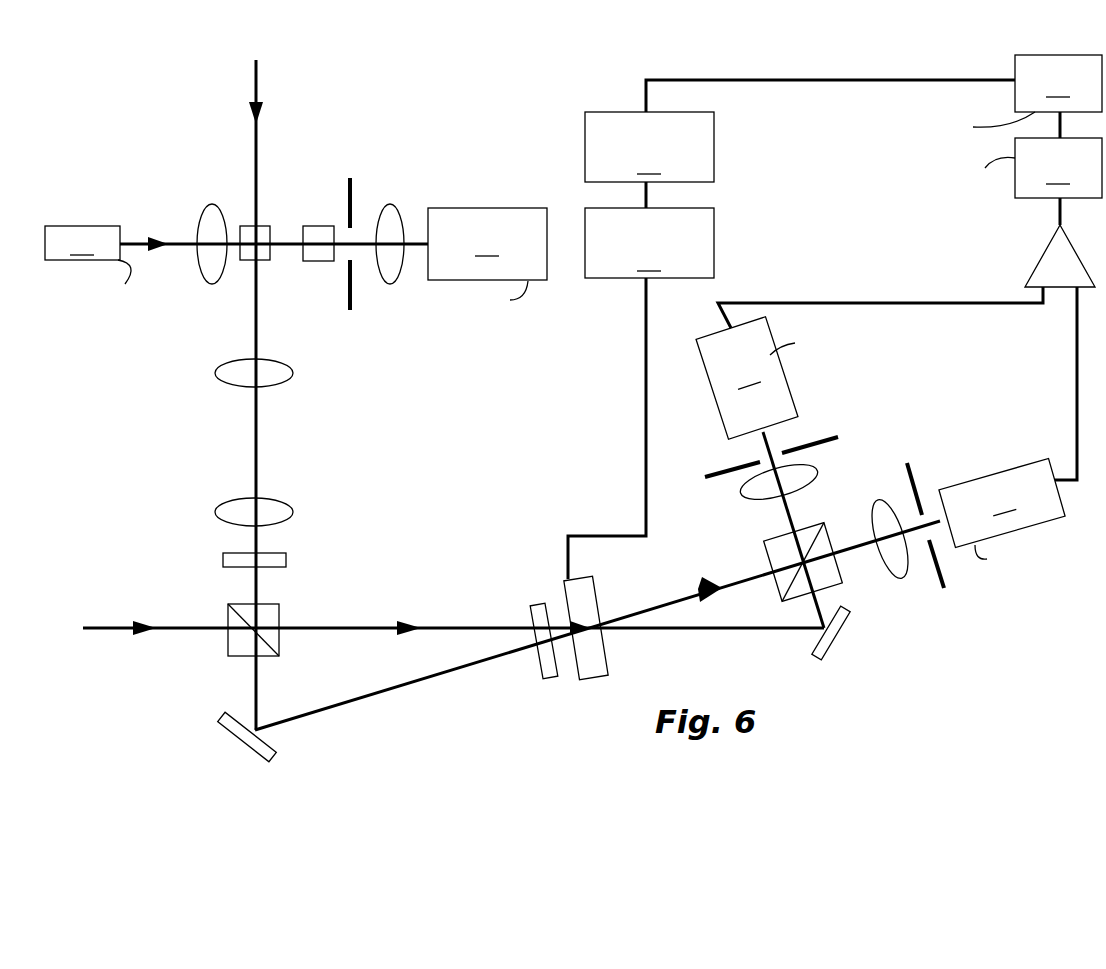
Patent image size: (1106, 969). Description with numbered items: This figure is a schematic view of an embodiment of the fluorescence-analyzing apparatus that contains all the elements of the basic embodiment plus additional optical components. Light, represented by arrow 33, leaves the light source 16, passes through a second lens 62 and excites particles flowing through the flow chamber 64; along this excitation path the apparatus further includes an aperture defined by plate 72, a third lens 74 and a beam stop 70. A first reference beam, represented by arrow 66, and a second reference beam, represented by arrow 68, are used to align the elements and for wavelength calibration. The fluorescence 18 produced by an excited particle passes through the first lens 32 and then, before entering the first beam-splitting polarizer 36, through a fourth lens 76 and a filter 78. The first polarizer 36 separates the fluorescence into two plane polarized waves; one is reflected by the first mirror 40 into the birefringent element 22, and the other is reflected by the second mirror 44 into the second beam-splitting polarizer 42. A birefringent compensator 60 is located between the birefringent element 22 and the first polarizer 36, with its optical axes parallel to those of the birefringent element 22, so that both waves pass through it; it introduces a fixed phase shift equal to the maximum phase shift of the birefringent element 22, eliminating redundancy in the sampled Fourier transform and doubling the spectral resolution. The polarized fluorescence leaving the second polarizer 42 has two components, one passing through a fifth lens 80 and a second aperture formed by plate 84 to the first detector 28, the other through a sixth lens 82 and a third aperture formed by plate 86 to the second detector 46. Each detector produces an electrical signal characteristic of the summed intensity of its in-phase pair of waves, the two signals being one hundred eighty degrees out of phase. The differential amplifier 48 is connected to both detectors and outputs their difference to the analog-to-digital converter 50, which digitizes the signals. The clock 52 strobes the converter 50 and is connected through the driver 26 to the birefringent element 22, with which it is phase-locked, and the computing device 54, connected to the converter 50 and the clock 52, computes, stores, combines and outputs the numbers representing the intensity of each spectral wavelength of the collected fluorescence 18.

The light source 16 is at (87, 274).
The fluorescence 18 is at (250, 308).
The birefringent element 22 is at (612, 663).
The driver 26 is at (641, 380).
The first detector 28 is at (1021, 528).
The first lens 32 is at (278, 383).
The arrow representing light from light source 33 is at (160, 240).
The first beam-splitting polarizer 36 is at (280, 652).
The first mirror 40 is at (242, 744).
The second beam-splitting polarizer 42 is at (845, 586).
The second mirror 44 is at (848, 626).
The second detector 46 is at (804, 378).
The differential amplifier 48 is at (1052, 252).
The analog-to-digital converter 50 is at (980, 181).
The clock 52 is at (800, 131).
The computing device 54 is at (980, 98).
The birefringent compensator 60 is at (536, 660).
The second lens 62 is at (237, 188).
The flow chamber 64 is at (272, 236).
The first reference beam 66 is at (262, 118).
The second reference beam 68 is at (200, 626).
The beam stop 70 is at (322, 262).
The plate defining aperture 72 is at (347, 190).
The third lens 74 is at (392, 220).
The fourth lens 76 is at (289, 506).
The filter 78 is at (286, 558).
The fifth lens 80 is at (874, 511).
The sixth lens 82 is at (752, 497).
The plate forming second aperture 84 is at (912, 473).
The plate forming third aperture 86 is at (737, 470).